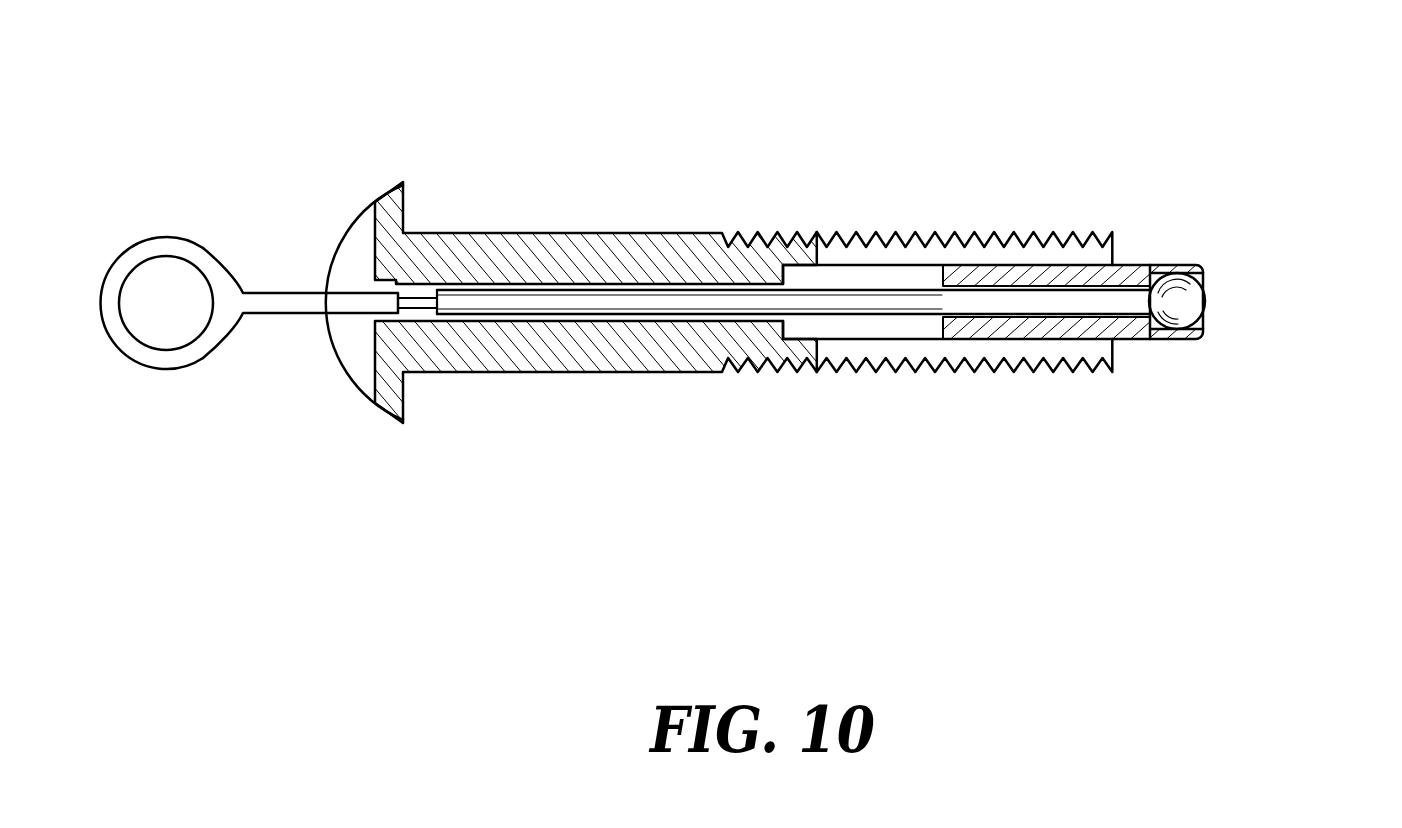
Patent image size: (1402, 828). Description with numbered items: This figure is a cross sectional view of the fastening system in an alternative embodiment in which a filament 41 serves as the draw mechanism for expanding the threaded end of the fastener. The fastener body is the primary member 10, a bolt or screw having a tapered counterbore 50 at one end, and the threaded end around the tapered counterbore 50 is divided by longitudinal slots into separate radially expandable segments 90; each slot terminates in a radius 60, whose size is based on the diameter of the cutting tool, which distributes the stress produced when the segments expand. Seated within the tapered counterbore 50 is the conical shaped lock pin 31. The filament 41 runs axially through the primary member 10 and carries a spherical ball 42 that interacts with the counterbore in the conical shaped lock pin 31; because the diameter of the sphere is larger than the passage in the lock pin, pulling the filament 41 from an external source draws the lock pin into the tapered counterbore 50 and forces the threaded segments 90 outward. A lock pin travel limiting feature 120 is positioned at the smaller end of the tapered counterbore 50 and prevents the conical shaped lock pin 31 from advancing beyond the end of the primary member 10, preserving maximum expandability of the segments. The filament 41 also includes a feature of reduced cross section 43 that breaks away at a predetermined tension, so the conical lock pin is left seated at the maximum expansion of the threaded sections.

The primary member 10 is at (520, 233).
The filament 41 is at (117, 256).
The feature of reduced cross section 43 is at (418, 295).
The spherical ball 42 is at (1150, 263).
The radius 60 is at (822, 247).
The tapered counterbore 50 is at (845, 338).
The radially expandable segments 90 is at (1117, 340).
The conical shaped lock pin 31 is at (1203, 330).
The lock pin travel limiting feature 120 is at (783, 333).